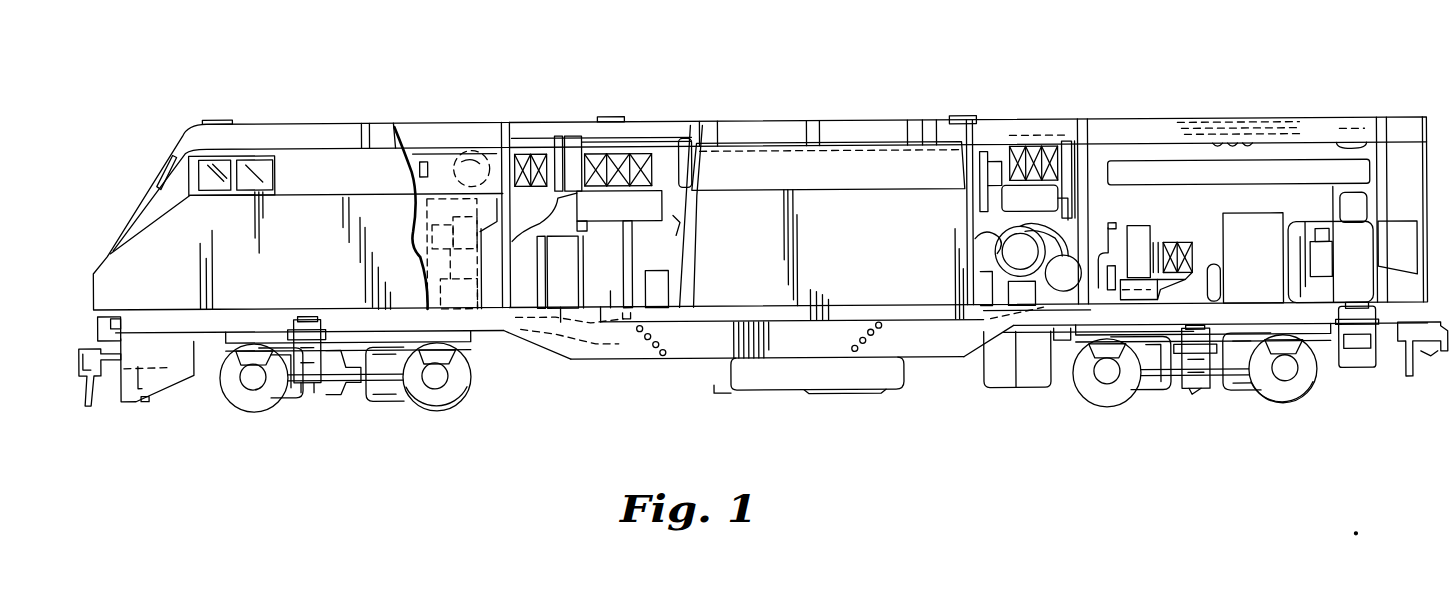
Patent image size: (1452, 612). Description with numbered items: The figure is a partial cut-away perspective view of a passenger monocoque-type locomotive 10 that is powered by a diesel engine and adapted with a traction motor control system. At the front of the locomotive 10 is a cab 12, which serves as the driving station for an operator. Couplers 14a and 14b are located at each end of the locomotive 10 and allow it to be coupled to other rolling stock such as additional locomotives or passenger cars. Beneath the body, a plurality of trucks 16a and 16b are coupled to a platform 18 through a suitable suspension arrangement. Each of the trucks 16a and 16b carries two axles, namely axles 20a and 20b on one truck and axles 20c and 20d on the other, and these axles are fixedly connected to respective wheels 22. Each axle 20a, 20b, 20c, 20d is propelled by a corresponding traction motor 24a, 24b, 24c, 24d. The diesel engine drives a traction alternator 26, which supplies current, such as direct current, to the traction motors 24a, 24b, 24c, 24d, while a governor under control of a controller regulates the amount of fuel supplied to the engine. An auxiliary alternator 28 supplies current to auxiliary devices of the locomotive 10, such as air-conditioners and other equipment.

The monocoque-type locomotive 10 is at (729, 51).
The cab 12 is at (188, 230).
The coupler 14a is at (88, 343).
The coupler 14b is at (1440, 362).
The truck 16a is at (332, 396).
The truck 16b is at (1189, 400).
The platform 18 is at (1312, 316).
The axle 20a is at (252, 376).
The axle 20b is at (445, 383).
The axle 20c is at (1103, 372).
The axle 20d is at (1292, 376).
The wheels 22 is at (429, 402).
The traction motor 24a is at (297, 393).
The traction motor 24b is at (388, 392).
The traction motor 24c is at (1145, 392).
The traction motor 24d is at (1240, 385).
The traction alternator 26 is at (643, 309).
The auxiliary alternator 28 is at (603, 318).